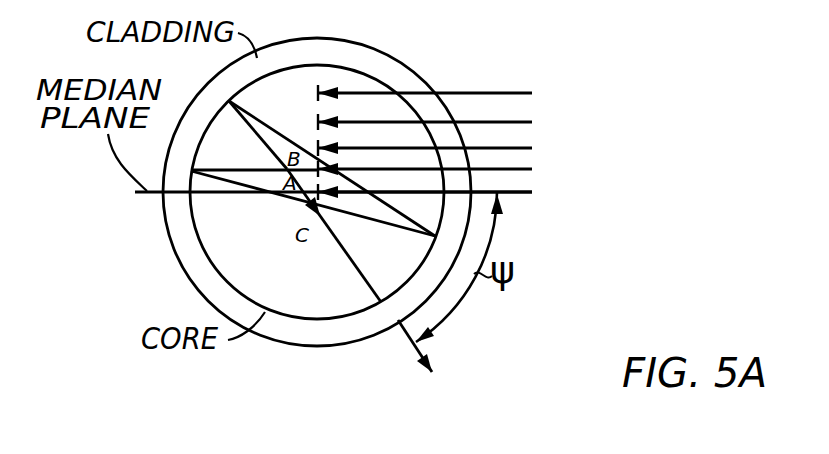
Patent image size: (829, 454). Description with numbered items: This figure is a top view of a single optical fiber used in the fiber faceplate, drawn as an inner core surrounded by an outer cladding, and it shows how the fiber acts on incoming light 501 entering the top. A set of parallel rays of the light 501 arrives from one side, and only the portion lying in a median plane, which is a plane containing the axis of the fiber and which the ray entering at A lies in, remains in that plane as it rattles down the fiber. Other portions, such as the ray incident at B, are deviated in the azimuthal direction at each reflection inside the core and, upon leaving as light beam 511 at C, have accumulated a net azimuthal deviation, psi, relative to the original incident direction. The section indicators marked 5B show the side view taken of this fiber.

The light 501 is at (545, 215).
The light beam 511 is at (405, 338).
The section view indicator for FIG. 5B is at (89, 165).